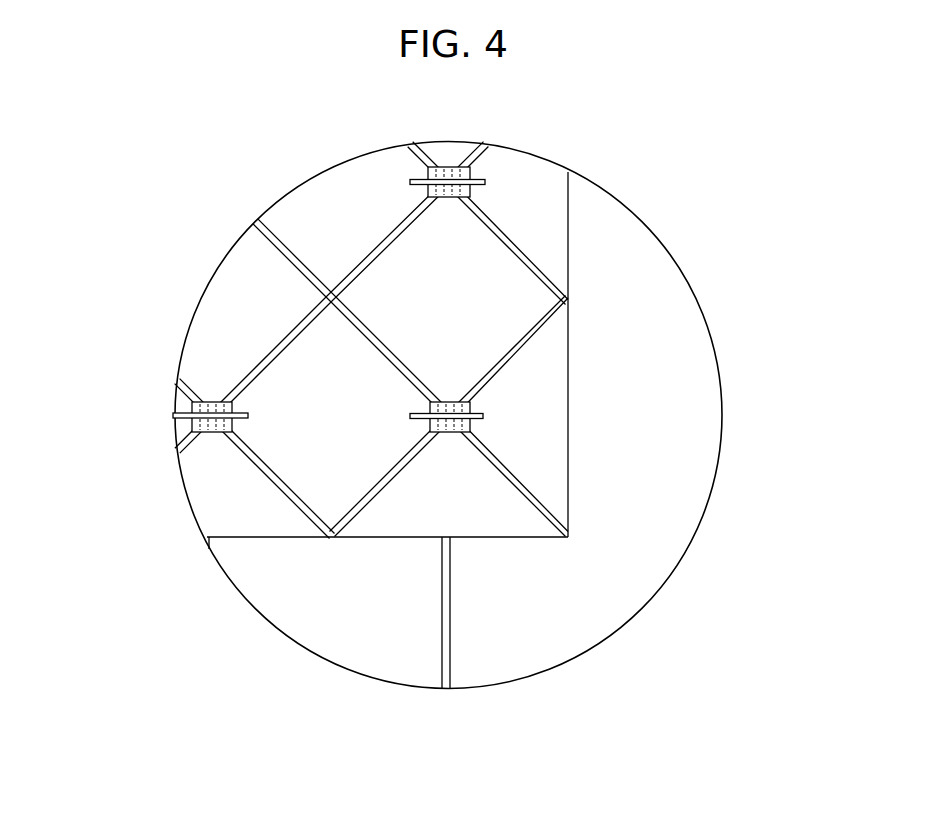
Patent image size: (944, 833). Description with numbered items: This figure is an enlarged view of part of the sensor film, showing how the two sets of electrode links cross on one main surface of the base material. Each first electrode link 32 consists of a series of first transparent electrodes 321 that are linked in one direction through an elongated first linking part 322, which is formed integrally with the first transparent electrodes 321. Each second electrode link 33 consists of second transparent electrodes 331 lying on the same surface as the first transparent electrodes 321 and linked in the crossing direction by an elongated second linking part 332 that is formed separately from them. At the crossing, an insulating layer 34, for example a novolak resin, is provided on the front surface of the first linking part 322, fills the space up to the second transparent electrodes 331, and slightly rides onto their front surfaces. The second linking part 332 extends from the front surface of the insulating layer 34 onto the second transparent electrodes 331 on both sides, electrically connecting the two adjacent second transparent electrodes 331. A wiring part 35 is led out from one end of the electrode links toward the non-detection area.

The first electrode link 32 is at (478, 543).
The first transparent electrode 321 is at (493, 282).
The first linking part 322 is at (453, 397).
The second electrode link 33 is at (602, 418).
The second transparent electrode 331 is at (543, 395).
The second linking part 332 is at (482, 410).
The insulating layer 34 is at (450, 434).
The wiring part 35 is at (442, 622).